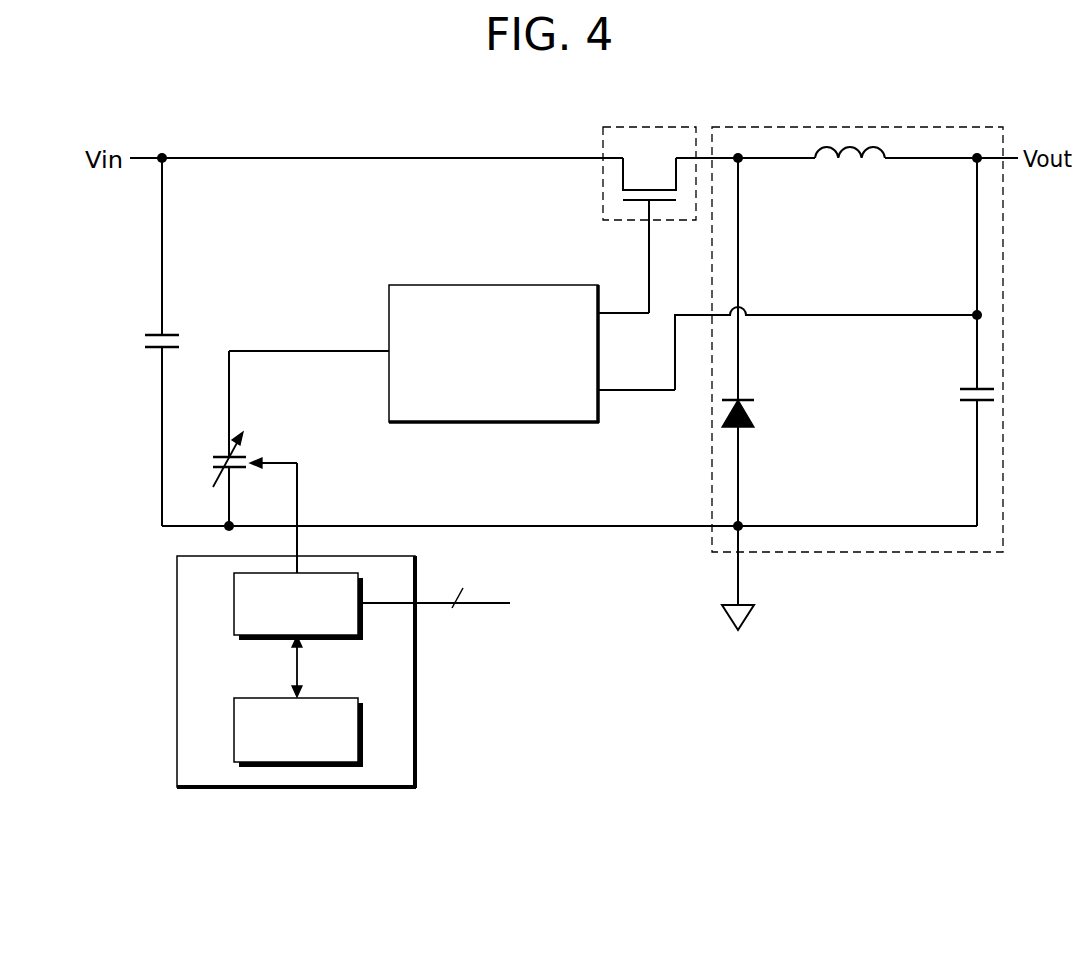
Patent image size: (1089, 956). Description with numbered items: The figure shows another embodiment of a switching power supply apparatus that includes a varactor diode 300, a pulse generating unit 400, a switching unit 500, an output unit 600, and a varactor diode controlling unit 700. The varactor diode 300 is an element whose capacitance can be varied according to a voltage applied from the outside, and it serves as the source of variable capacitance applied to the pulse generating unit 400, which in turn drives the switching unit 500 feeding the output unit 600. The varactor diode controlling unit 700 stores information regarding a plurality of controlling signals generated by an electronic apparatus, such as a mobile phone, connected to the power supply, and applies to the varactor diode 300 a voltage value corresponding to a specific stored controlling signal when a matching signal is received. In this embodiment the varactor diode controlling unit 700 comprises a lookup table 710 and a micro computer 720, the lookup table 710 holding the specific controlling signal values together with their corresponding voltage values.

The varactor diode 300 is at (212, 462).
The pulse generating unit 400 is at (563, 423).
The switching unit 500 is at (603, 142).
The output unit 600 is at (863, 552).
The varactor diode controlling unit 700 is at (367, 709).
The lookup table 710 is at (295, 765).
The micro computer 720 is at (234, 598).